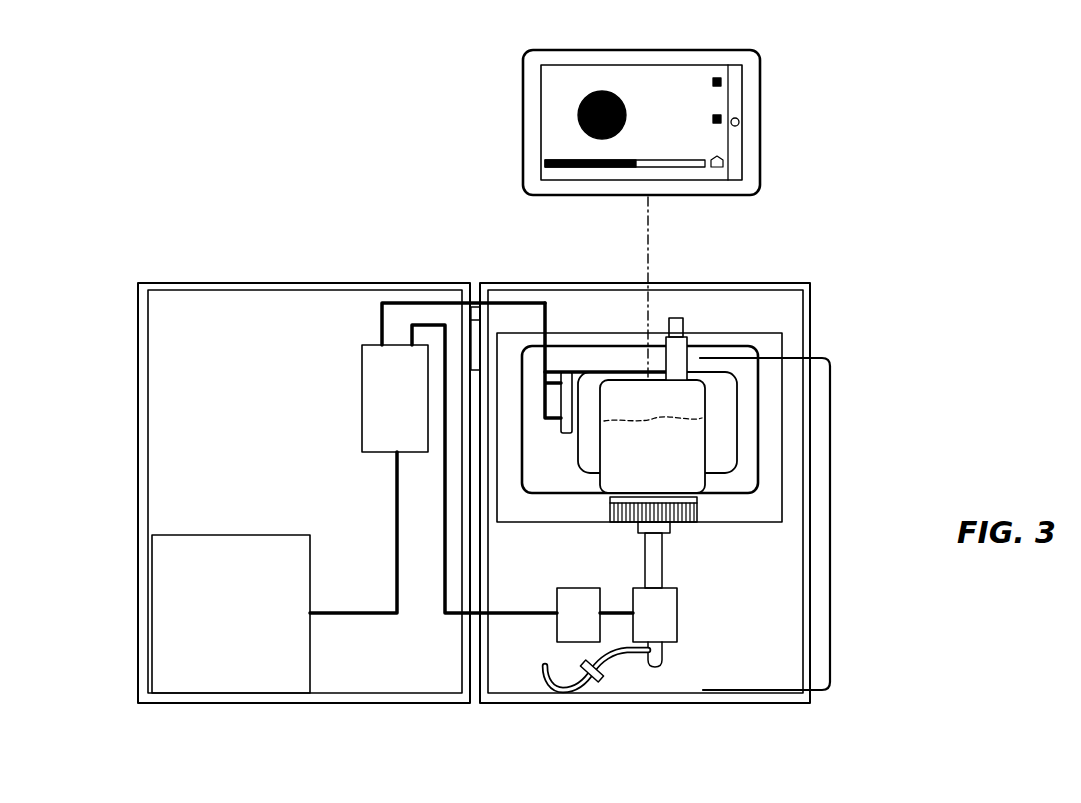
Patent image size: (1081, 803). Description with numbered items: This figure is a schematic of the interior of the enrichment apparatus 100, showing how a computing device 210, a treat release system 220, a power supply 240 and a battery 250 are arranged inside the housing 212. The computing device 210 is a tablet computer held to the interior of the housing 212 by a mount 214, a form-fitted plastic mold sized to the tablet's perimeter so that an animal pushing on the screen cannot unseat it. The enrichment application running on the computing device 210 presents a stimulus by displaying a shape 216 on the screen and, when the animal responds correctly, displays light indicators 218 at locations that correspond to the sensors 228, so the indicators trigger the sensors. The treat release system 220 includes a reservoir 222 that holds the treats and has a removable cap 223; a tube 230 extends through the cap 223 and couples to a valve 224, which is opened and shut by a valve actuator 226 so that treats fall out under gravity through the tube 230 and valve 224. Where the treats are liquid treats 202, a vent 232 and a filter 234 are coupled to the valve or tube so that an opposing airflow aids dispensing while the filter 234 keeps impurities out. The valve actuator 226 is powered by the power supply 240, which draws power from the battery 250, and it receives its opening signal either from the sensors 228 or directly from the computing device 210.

The enrichment apparatus 100 is at (154, 112).
The computing device 210 is at (722, 49).
The shape 216 is at (604, 91).
The light indicators 218 is at (721, 118).
The housing 212 is at (568, 307).
The power supply 240 is at (362, 363).
The battery 250 is at (283, 535).
The mount 214 is at (701, 335).
The reservoir 222 is at (712, 357).
The treat release system 220 is at (832, 430).
The sensors 228 is at (574, 405).
The liquid treats 202 is at (617, 450).
The removable cap 223 is at (698, 508).
The tube 230 is at (664, 553).
The valve 224 is at (568, 588).
The valve actuator 226 is at (678, 598).
The vent 232 is at (619, 657).
The filter 234 is at (597, 680).